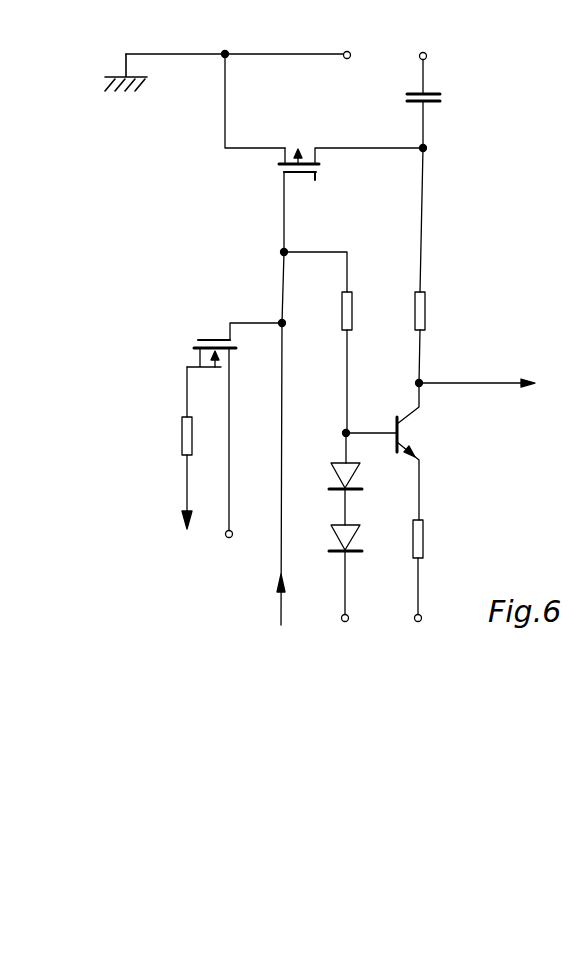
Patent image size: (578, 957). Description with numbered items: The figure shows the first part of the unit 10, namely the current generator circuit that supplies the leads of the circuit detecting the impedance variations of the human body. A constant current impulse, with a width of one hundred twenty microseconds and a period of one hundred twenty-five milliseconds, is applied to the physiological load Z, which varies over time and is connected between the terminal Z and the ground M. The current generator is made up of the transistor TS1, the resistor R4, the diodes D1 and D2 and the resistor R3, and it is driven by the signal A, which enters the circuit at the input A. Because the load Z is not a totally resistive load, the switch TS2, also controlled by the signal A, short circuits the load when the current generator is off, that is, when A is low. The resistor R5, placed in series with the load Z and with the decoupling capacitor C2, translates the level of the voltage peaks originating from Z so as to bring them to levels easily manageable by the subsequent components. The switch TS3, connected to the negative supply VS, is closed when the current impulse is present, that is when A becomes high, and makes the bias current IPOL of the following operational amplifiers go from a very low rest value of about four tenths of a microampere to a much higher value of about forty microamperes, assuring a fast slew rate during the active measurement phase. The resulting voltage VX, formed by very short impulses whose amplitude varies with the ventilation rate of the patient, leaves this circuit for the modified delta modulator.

The unit 10 is at (492, 156).
The ground M is at (126, 88).
The physiological load Z is at (259, 56).
The decoupling capacitor C2 is at (443, 99).
The switch TS2 is at (351, 184).
The switch TS3 is at (234, 413).
The resistor R3 is at (343, 302).
The resistor R5 is at (426, 302).
The voltage VX is at (491, 385).
The transistor TS1 is at (394, 451).
The diode D1 is at (331, 479).
The diode D2 is at (331, 573).
The resistor R4 is at (424, 547).
The bias current IPOL is at (171, 467).
The supply voltage - VS is at (230, 550).
The signal A is at (277, 451).